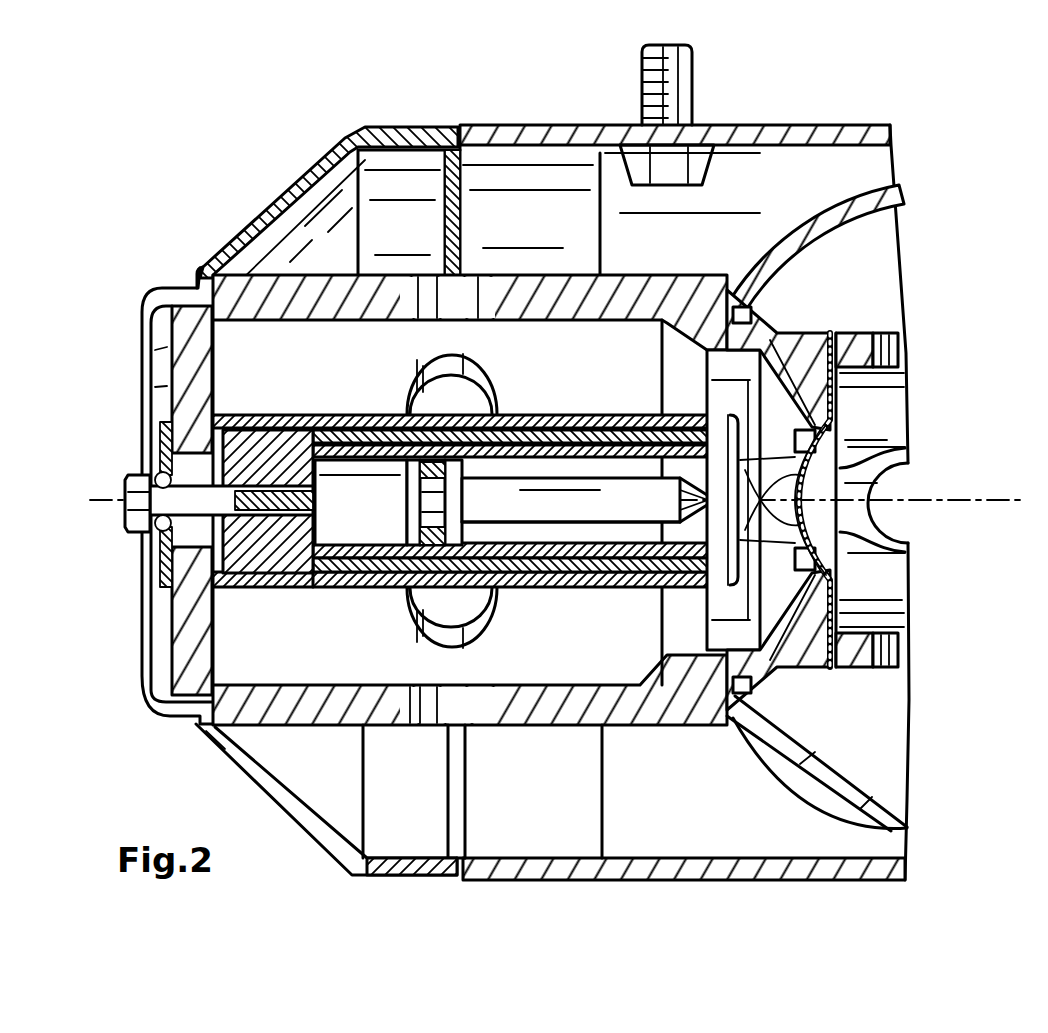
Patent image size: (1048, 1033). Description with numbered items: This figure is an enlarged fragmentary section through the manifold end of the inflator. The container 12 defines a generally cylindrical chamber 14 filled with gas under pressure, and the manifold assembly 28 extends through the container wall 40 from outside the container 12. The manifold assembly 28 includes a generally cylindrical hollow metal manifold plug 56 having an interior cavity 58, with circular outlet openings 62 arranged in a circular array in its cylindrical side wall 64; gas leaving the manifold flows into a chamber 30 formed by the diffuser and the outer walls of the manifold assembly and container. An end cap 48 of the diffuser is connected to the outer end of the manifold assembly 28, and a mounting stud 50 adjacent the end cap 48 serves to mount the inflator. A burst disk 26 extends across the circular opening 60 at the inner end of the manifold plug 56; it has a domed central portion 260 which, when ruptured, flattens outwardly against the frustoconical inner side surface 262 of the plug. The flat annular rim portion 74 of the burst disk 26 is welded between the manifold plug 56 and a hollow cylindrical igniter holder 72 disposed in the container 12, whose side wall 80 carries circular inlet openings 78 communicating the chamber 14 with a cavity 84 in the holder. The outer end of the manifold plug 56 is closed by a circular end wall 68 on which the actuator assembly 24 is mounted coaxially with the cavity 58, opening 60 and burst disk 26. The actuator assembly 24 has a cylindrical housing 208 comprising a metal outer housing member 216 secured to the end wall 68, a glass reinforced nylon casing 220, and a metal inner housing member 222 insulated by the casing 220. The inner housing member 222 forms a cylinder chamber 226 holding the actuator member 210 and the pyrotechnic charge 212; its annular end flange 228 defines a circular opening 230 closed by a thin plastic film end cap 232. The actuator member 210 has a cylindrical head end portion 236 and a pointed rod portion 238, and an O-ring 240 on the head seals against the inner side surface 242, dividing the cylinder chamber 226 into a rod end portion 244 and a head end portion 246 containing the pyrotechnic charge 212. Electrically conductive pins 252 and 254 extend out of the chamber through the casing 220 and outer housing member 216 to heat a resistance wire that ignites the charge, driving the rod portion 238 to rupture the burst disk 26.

The container 12 is at (793, 782).
The chamber 14 is at (893, 233).
The actuator assembly 24 is at (322, 410).
The burst disk 26 is at (850, 395).
The manifold assembly 28 is at (262, 728).
The chamber 30 is at (253, 267).
The wall 40 is at (813, 240).
The end cap 48 is at (235, 248).
The mounting stud 50 is at (673, 84).
The manifold plug 56 is at (308, 724).
The interior cavity 58 is at (572, 665).
The circular opening 60 is at (800, 563).
The outlet openings 62 is at (440, 372).
The side wall 64 is at (532, 300).
The end wall 68 is at (193, 640).
The igniter holder 72 is at (857, 330).
The rim portion 74 is at (838, 609).
The inlet openings 78 is at (900, 355).
The side wall 80 is at (867, 670).
The cavity 84 is at (875, 637).
The housing 208 is at (622, 410).
The actuator member 210 is at (579, 529).
The pyrotechnic charge 212 is at (327, 537).
The outer housing member 216 is at (268, 420).
The casing 220 is at (350, 560).
The inner housing member 222 is at (567, 440).
The cylinder chamber 226 is at (513, 533).
The end flange 228 is at (790, 463).
The circular opening 230 is at (840, 530).
The end cap 232 is at (848, 473).
The head end portion 236 is at (412, 486).
The rod portion 238 is at (640, 492).
The O-ring 240 is at (412, 516).
The inner side surface 242 is at (515, 448).
The rod end portion 244 is at (633, 533).
The head end portion 246 is at (350, 455).
The pin 252 is at (138, 490).
The pin 254 is at (133, 527).
The central portion 260 is at (800, 500).
The inner side surface 262 is at (795, 585).